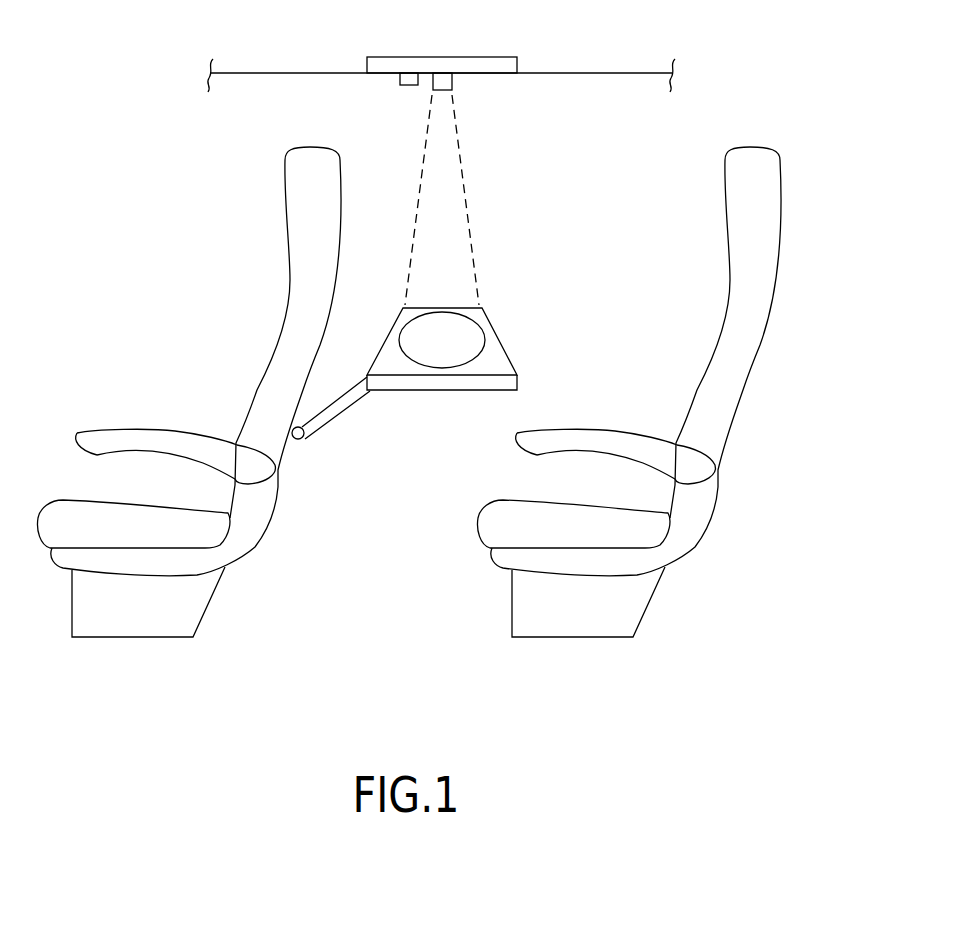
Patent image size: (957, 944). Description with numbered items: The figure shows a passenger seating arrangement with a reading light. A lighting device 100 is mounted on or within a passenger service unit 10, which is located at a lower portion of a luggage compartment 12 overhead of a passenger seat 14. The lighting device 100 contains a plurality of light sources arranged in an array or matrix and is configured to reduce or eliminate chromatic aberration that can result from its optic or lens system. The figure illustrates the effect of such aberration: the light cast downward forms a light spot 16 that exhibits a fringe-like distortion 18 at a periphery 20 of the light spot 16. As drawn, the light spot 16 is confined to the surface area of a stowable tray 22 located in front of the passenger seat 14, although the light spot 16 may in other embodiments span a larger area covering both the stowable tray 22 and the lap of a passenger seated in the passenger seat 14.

The passenger service unit 10 is at (471, 66).
The luggage compartment 12 is at (280, 72).
The passenger seat 14 is at (718, 387).
The light spot 16 is at (432, 349).
The fringe-like distortion 18 is at (441, 383).
The periphery 20 is at (480, 318).
The stowable tray 22 is at (467, 385).
The lighting device 100 is at (445, 83).